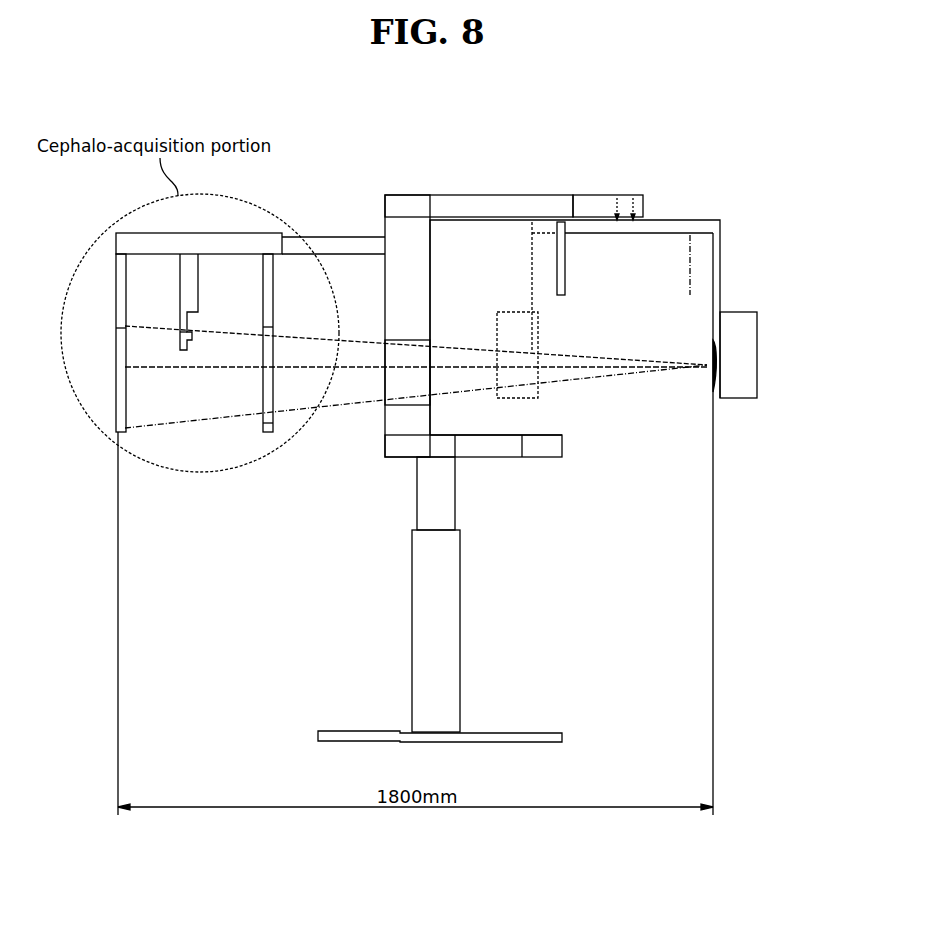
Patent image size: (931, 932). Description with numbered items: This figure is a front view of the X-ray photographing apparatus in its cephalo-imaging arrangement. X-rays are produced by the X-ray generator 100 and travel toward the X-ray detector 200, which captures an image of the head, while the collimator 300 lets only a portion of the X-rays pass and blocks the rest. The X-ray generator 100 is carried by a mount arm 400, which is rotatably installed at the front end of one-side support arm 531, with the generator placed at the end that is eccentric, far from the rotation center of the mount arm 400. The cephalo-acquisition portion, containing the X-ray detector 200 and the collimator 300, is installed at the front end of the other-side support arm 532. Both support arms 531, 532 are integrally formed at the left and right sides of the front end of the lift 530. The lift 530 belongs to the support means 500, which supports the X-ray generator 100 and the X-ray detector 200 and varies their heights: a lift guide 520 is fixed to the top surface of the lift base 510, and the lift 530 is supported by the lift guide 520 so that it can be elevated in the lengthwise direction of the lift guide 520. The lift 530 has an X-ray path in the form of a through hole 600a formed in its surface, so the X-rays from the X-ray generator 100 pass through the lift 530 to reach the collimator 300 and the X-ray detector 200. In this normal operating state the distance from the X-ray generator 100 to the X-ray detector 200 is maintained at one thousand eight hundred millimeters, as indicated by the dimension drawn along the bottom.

The X-ray generator 100 is at (745, 398).
The X-ray detector 200 is at (116, 417).
The collimator 300 is at (263, 392).
The mount arm 400 is at (705, 220).
The support means 500 is at (466, 631).
The lift base 510 is at (537, 742).
The lift guide 520 is at (420, 650).
The lift 530 is at (385, 432).
The support arm 531 is at (492, 200).
The support arm 532 is at (345, 247).
The through hole 600a is at (412, 378).